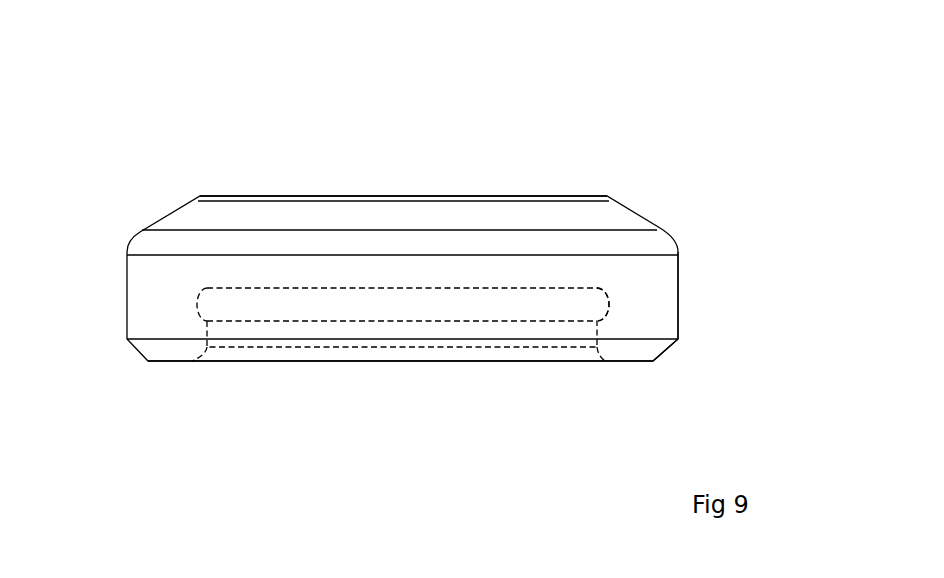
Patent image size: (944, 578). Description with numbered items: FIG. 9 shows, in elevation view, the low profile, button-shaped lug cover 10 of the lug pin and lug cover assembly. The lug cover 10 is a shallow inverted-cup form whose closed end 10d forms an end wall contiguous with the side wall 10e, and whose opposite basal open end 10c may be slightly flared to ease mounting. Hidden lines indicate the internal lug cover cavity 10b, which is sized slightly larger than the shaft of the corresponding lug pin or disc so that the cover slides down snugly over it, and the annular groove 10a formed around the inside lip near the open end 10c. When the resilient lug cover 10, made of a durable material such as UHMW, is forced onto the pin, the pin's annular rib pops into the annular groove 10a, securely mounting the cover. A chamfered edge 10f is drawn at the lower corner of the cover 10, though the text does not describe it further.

The lug cover 10 is at (517, 97).
The annular groove 10a is at (613, 307).
The lug cover cavity 10b is at (480, 290).
The open end 10c is at (518, 375).
The closed end 10d is at (262, 195).
The side wall 10e is at (680, 318).
The chamfered edge 10f is at (640, 363).